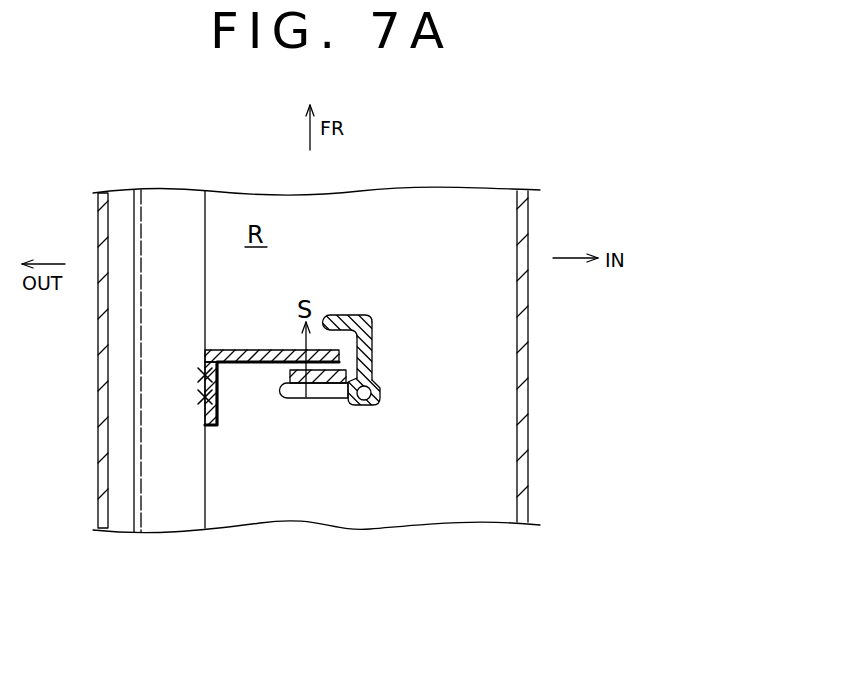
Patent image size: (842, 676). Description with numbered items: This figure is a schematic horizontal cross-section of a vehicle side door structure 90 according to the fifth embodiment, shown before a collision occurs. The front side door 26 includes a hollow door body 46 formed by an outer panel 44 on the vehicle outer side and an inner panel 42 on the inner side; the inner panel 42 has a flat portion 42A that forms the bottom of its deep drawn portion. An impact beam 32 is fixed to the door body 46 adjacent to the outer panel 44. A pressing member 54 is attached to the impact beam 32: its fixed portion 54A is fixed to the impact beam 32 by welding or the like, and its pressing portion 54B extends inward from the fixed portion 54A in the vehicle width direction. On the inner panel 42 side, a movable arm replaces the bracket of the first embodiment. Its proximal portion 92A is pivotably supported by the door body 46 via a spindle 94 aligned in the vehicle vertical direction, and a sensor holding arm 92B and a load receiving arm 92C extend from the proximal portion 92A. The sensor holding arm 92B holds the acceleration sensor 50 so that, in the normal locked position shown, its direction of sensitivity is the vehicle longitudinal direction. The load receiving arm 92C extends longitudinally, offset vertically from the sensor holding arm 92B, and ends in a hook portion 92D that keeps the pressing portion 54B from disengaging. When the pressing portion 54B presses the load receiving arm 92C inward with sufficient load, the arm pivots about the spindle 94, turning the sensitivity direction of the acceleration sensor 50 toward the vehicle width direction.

The outer panel 44 is at (100, 215).
The impact beam 32 is at (170, 203).
The inner panel 42 is at (580, 356).
The flat portion 42A is at (528, 363).
The pressing member 54 is at (252, 396).
The fixed portion 54A is at (213, 425).
The pressing portion 54B is at (250, 350).
The acceleration sensor 50 is at (292, 378).
The vehicle side door structure 90 is at (446, 372).
The proximal portion 92A is at (375, 432).
The sensor holding arm 92B is at (303, 400).
The load receiving arm 92C is at (372, 348).
The hook portion 92D is at (340, 320).
The spindle 94 is at (351, 436).
The door body 46 is at (316, 576).
The front side door 26 is at (386, 546).